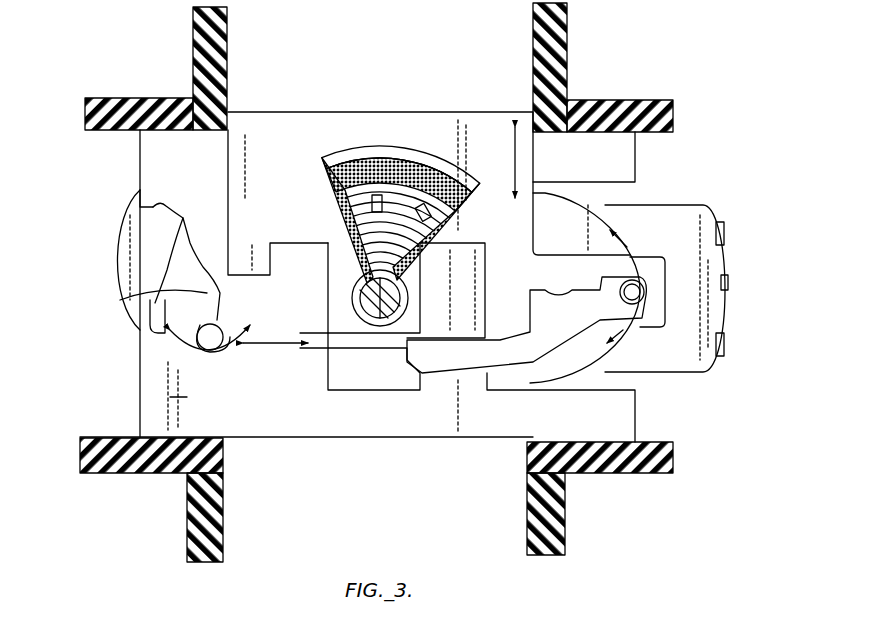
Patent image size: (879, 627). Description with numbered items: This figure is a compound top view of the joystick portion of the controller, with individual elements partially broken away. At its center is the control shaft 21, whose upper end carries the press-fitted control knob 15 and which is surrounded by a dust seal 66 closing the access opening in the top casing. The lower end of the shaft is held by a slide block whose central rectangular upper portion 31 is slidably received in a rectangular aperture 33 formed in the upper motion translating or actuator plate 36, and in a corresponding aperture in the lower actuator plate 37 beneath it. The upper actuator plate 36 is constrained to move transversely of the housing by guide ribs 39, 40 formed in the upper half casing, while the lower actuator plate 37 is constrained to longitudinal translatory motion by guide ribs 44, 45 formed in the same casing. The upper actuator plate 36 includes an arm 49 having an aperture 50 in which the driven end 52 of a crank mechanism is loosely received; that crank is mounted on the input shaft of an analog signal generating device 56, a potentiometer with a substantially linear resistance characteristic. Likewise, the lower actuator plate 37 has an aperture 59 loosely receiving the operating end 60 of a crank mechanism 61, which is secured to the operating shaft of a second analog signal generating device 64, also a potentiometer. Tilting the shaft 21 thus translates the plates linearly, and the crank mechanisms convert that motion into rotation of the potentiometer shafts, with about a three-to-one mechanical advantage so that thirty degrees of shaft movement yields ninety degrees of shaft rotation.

The control knob 15 is at (390, 193).
The control shaft 21 is at (377, 300).
The central rectangular upper portion 31 is at (335, 297).
The rectangular aperture 33 is at (465, 250).
The upper motion translating or actuator plate 36 is at (305, 112).
The lower motion translating or actuator plate 37 is at (170, 397).
The guide rib 39 is at (220, 92).
The guide rib 40 is at (560, 90).
The guide rib 44 is at (133, 103).
The guide rib 45 is at (92, 437).
The arm 49 is at (647, 257).
The aperture 50 is at (630, 260).
The driven end 52 is at (640, 290).
The analog signal generating device 56 is at (630, 347).
The aperture 59 is at (120, 300).
The operating end 60 is at (210, 350).
The crank mechanism 61 is at (158, 247).
The analog signal generating device 64 is at (110, 270).
The dust seal 66 is at (440, 167).